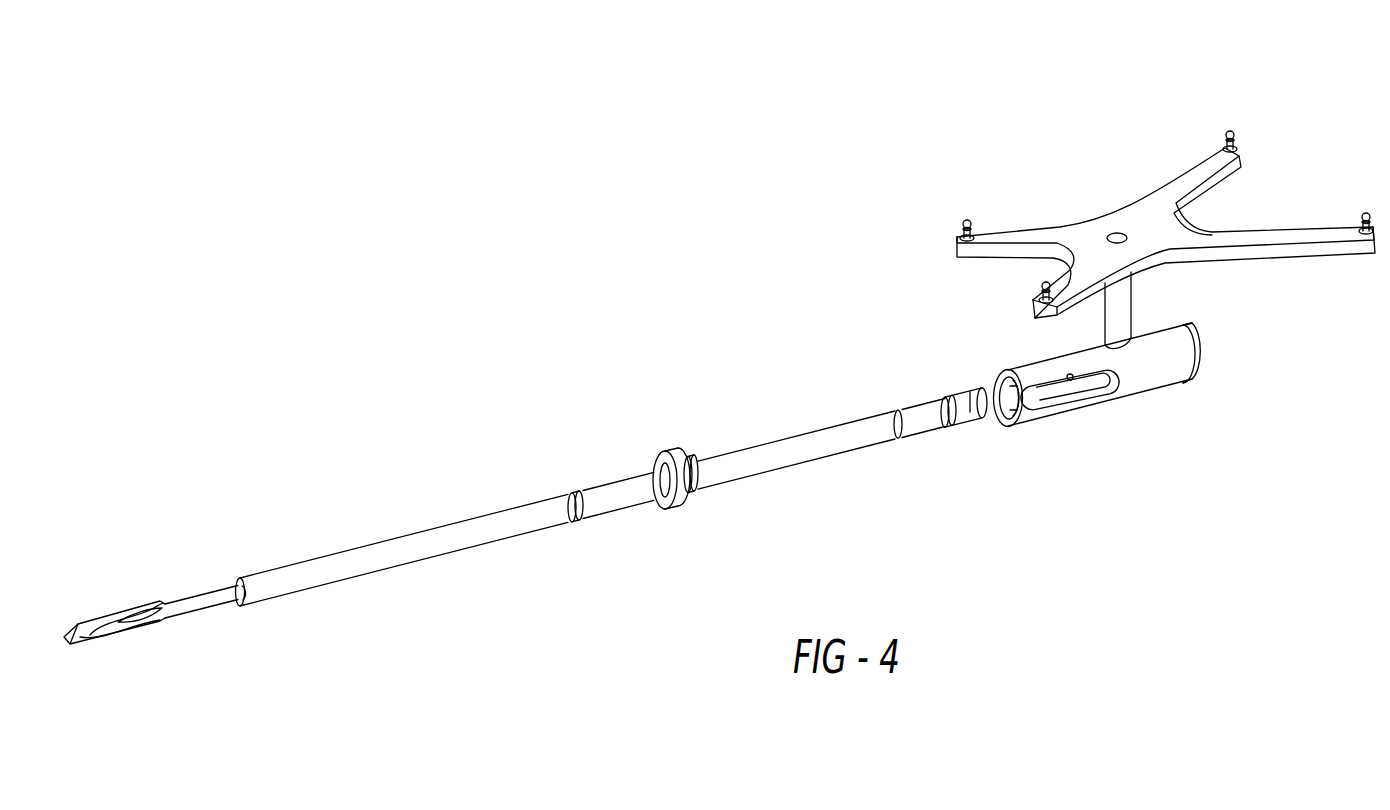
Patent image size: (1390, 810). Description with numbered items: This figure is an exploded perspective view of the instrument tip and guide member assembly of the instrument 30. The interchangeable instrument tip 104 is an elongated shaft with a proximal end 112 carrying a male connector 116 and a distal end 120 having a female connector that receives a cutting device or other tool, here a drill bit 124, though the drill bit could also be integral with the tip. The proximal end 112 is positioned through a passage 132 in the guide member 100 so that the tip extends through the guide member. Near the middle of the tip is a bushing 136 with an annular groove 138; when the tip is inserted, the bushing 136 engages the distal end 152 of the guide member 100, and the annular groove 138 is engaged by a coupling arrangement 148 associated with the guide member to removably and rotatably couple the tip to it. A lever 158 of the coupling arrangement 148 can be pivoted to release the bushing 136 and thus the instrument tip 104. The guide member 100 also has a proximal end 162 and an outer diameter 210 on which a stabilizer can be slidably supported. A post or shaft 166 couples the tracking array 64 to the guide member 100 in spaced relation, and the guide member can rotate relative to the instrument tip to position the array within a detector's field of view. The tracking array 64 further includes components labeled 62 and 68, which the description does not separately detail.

The instrument 30 is at (637, 329).
The cross-shaped plate 62 is at (1068, 222).
The tracking array 64 is at (1143, 181).
The fasteners / pins 68 is at (1231, 131).
The guide member 100 is at (1144, 407).
The interchangeable instrument tip 104 is at (473, 570).
The proximal end 112 is at (966, 419).
The male connector 116 is at (977, 415).
The distal end 120 is at (248, 601).
The drill bit 124 is at (193, 608).
The passage 132 is at (1002, 418).
The bushing 136 is at (677, 509).
The annular groove 138 is at (697, 489).
The coupling arrangement 148 is at (1047, 400).
The distal end 152 is at (1002, 384).
The lever 158 is at (1072, 397).
The proximal end 162 is at (1194, 338).
The post or shaft 166 is at (1133, 312).
The outer diameter 210 is at (1170, 372).